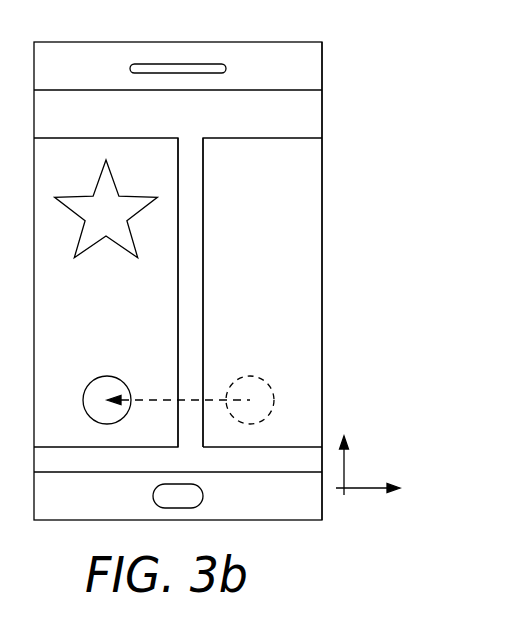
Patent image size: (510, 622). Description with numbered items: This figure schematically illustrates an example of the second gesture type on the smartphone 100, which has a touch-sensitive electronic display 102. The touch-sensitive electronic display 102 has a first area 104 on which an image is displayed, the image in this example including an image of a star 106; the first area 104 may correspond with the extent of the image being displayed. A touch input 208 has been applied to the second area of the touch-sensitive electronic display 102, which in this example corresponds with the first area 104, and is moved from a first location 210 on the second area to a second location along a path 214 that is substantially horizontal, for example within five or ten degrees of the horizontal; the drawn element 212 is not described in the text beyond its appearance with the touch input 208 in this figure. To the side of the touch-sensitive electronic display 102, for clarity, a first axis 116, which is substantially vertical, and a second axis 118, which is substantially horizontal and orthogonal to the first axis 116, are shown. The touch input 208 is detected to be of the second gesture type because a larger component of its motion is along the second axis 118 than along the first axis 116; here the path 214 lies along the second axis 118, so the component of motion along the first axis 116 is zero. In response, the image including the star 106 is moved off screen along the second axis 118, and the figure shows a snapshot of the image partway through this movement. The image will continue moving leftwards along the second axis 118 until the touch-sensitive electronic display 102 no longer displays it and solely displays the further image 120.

The smartphone 100 is at (143, 42).
The touch-sensitive electronic display 102 is at (322, 217).
The first area 104 is at (178, 297).
The star 106 is at (117, 195).
The further image 120 is at (270, 210).
The touch input 208 is at (92, 382).
The direction arrow 212 is at (102, 377).
The path 214 is at (187, 400).
The first location 210 is at (235, 378).
The first axis 116 is at (344, 440).
The second axis 118 is at (370, 488).